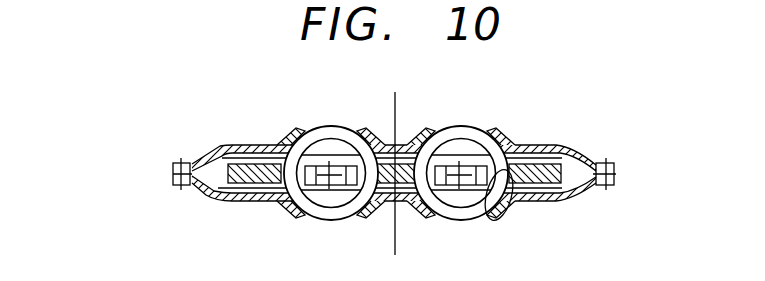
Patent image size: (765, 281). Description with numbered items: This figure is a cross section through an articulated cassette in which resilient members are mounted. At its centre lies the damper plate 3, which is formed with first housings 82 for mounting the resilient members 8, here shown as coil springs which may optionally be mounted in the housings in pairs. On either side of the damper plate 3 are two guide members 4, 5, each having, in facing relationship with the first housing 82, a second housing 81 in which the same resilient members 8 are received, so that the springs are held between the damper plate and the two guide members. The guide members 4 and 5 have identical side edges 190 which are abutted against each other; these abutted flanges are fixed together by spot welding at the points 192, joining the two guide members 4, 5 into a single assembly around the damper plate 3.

The damper plate 3 is at (573, 197).
The guide member 4 is at (538, 143).
The guide member 5 is at (546, 204).
The resilient member 8 is at (333, 222).
The second housing 81 is at (432, 130).
The first housing 82 is at (491, 218).
The side edge 190 is at (173, 181).
The spot welding point 192 is at (194, 190).